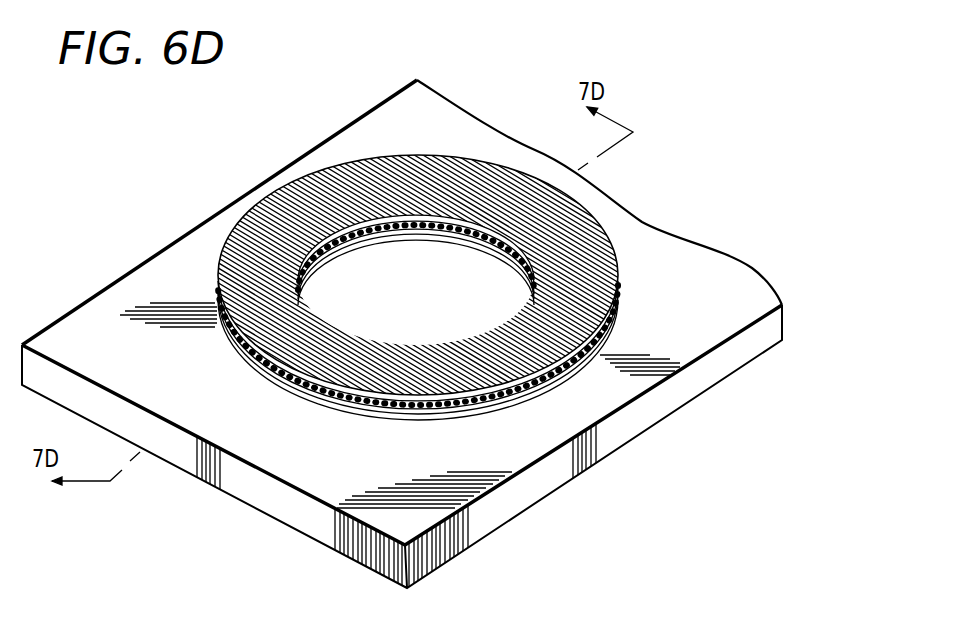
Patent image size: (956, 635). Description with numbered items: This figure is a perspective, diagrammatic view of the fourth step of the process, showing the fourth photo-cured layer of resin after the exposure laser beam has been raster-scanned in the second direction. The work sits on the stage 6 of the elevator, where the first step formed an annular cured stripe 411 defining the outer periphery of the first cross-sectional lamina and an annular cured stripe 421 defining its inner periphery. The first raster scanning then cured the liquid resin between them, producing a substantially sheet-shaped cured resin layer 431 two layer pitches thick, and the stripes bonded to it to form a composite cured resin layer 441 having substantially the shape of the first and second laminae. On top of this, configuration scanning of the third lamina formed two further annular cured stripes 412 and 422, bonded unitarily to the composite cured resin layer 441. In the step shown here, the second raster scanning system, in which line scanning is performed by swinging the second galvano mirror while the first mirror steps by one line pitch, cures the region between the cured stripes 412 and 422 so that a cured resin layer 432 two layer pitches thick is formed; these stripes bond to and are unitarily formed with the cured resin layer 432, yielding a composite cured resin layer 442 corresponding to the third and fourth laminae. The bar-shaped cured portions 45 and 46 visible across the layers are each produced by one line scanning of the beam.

The stage 6 is at (639, 237).
The bar-shaped cured portions 46 is at (293, 183).
The bar-shaped cured portions 45 is at (307, 408).
The annular cured stripe 411 is at (260, 383).
The annular cured stripe 412 is at (230, 355).
The annular cured stripe 421 is at (493, 230).
The annular cured stripe 422 is at (420, 233).
The cured resin layer 431 is at (487, 417).
The cured resin layer 432 is at (440, 420).
The composite cured resin layer 441 is at (617, 333).
The composite cured resin layer 442 is at (617, 310).